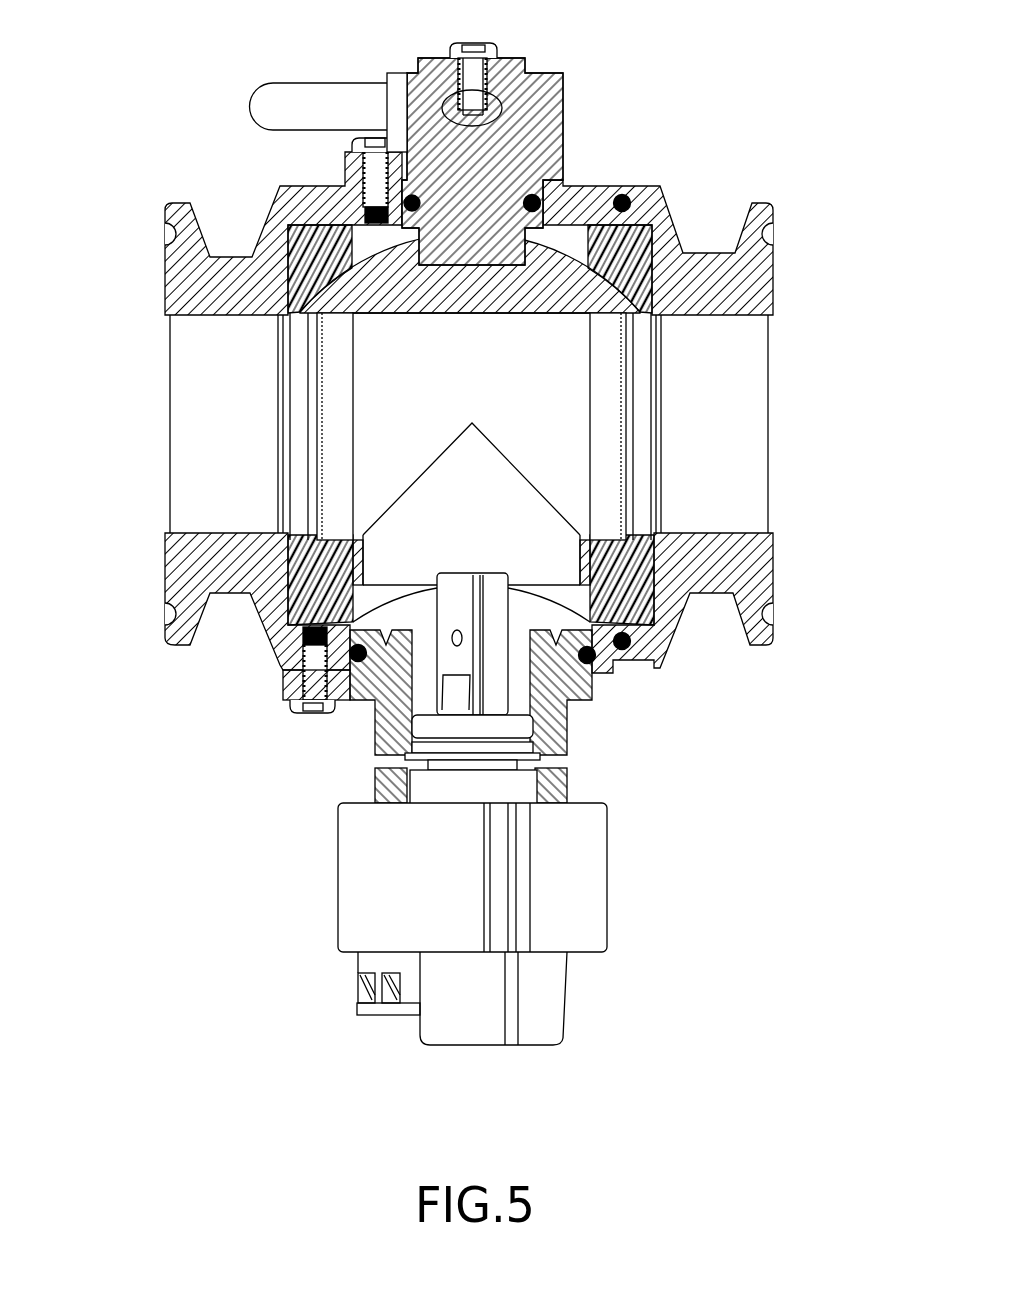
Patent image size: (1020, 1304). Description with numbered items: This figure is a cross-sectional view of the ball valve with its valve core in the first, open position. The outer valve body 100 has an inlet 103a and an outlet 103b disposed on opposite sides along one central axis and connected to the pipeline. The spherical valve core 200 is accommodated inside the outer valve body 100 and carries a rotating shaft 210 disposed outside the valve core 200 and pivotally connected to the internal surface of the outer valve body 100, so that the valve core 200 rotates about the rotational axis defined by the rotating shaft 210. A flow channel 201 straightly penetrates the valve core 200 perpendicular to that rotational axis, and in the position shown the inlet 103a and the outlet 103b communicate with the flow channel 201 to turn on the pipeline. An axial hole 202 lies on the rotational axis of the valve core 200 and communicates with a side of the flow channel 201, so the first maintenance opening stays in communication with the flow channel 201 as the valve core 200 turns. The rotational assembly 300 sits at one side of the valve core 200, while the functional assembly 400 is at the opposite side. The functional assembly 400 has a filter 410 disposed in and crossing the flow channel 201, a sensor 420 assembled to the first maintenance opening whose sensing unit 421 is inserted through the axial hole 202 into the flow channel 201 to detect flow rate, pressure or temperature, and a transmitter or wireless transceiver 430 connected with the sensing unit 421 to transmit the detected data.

The outer valve body 100 is at (603, 183).
The inlet 103a is at (788, 384).
The outlet 103b is at (162, 383).
The valve core 200 is at (367, 240).
The flow channel 201 is at (554, 352).
The axial hole 202 is at (556, 575).
The rotating shaft 210 is at (502, 139).
The rotational assembly 300 is at (297, 93).
The functional assembly 400 is at (162, 703).
The filter 410 is at (320, 481).
The sensor 420 is at (367, 744).
The sensing unit 421 is at (497, 665).
The transmitter or wireless transceiver 430 is at (326, 868).